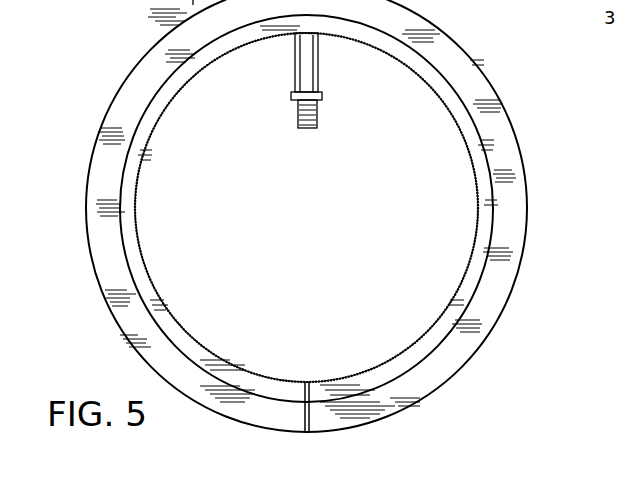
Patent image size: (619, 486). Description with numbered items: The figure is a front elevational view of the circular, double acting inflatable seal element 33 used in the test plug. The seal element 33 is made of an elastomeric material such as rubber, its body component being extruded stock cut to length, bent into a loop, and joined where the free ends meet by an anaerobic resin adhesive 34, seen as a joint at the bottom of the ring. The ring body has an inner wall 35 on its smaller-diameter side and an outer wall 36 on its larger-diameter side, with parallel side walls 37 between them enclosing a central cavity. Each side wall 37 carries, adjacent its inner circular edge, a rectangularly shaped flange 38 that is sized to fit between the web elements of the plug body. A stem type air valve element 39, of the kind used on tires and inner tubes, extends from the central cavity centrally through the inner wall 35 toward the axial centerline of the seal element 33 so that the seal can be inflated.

The circular seal element 33 is at (545, 179).
The anaerobic resin adhesive 34 is at (303, 415).
The inner wall 35 is at (150, 280).
The outer wall 36 is at (120, 90).
The side walls 37 is at (437, 52).
The rectangularly shaped flange 38 is at (472, 135).
The stem type air valve element 39 is at (318, 72).